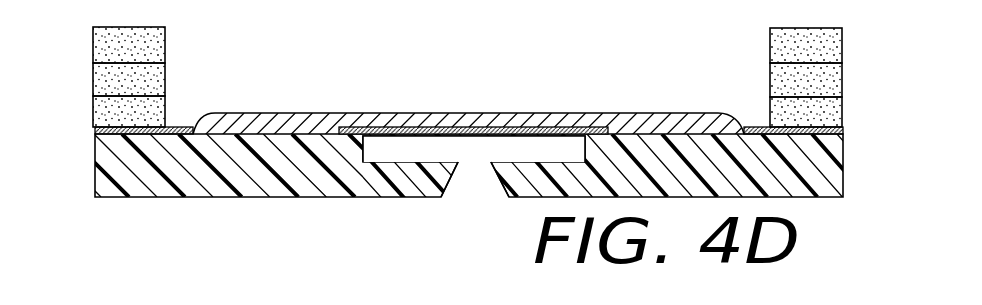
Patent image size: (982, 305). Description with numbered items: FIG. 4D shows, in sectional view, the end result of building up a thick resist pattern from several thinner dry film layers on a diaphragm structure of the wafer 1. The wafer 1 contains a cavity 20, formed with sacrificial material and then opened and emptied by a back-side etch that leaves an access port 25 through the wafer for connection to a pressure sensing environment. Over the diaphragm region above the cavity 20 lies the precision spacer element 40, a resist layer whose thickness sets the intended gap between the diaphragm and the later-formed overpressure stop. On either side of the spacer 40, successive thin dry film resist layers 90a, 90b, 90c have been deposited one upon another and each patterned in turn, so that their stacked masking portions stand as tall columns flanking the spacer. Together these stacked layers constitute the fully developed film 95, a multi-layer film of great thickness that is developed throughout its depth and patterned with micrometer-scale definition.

The wafer 1 is at (823, 165).
The cavity 20 is at (485, 160).
The access port 25 is at (470, 180).
The precision spacer element 40 is at (543, 117).
The dry film resist layer (first layer of the built-up multi-layer film) 90a is at (848, 97).
The dry film resist layer (second layer of the built-up multi-layer film) 90b is at (848, 63).
The dry film resist layer (third layer of the built-up multi-layer film) 90c is at (848, 28).
The fully developed film 95 is at (447, 119).